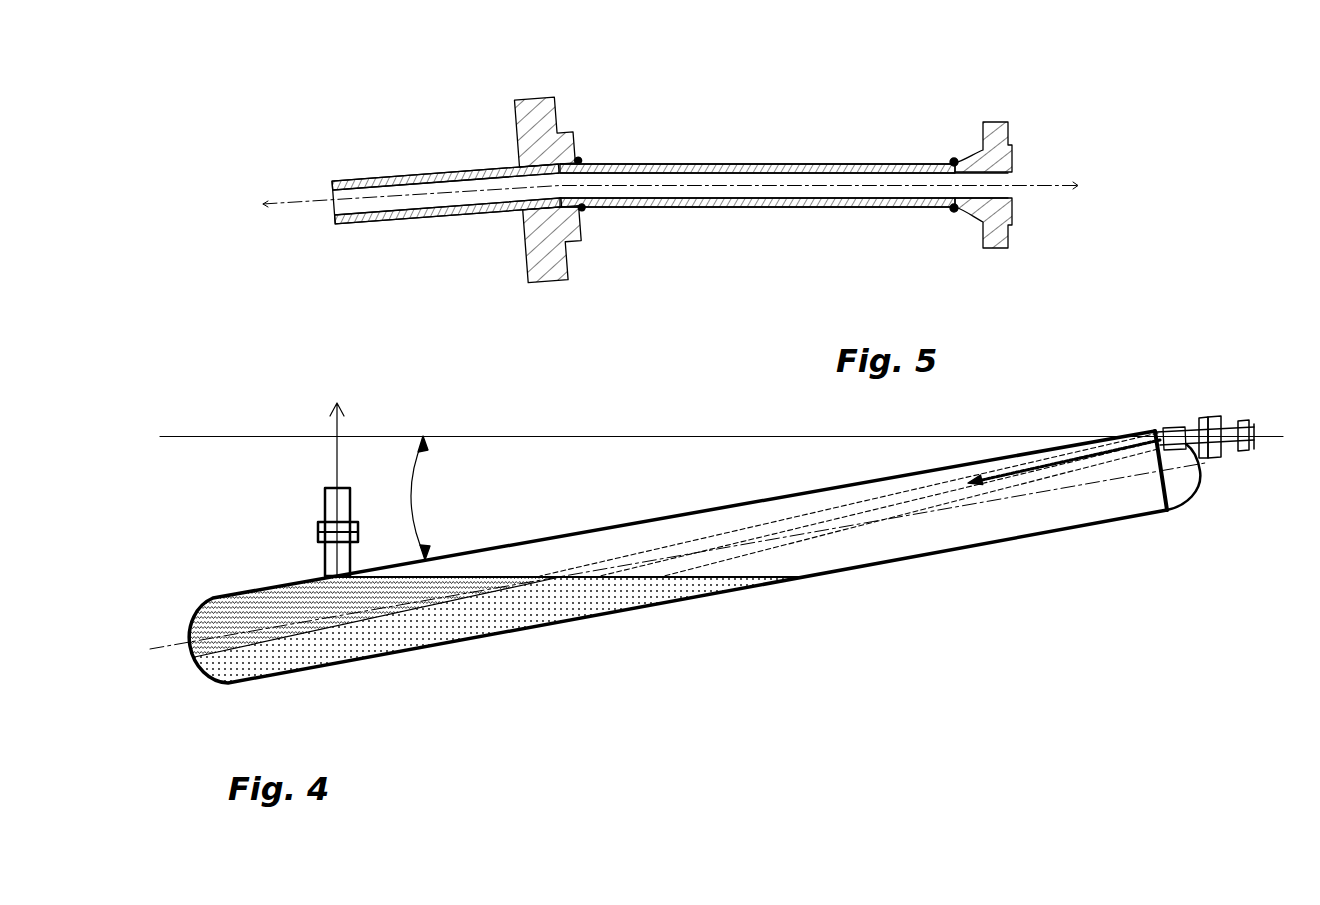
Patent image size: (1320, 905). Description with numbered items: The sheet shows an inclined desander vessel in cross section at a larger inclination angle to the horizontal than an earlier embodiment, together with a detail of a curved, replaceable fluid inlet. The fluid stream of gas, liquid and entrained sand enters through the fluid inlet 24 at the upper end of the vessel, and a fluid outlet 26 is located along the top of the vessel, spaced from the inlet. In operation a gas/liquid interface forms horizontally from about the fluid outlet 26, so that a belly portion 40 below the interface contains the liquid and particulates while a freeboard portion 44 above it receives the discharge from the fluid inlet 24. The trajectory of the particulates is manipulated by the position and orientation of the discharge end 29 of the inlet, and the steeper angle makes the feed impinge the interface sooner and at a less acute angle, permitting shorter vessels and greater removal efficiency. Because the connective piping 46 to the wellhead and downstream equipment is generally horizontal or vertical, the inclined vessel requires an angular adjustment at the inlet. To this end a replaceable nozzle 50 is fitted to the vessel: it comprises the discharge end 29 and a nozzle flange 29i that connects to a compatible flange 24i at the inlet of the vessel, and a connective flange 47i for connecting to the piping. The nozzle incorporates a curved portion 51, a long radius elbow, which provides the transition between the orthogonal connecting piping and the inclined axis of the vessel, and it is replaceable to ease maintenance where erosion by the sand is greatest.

In FIG. 4, the fluid inlet 24 is at (1173, 430).
In FIG. 4, the flange at the inlet 24i is at (1202, 458).
In FIG. 4, the fluid outlet 26 is at (325, 560).
In FIG. 5, the discharge end 29 is at (440, 173).
In FIG. 4, the discharge end 29 is at (1165, 428).
In FIG. 5, the nozzle flange 29i is at (535, 105).
In FIG. 4, the nozzle flange 29i is at (1222, 457).
In FIG. 4, the belly portion 40 is at (662, 590).
In FIG. 4, the freeboard portion 44 is at (802, 510).
In FIG. 4, the connective piping 46 is at (1284, 436).
In FIG. 5, the connective flange 47i is at (1007, 122).
In FIG. 4, the connective flange 47i is at (1245, 458).
In FIG. 4, the replaceable nozzle 50 is at (1200, 418).
In FIG. 5, the curved portion 51 is at (487, 190).